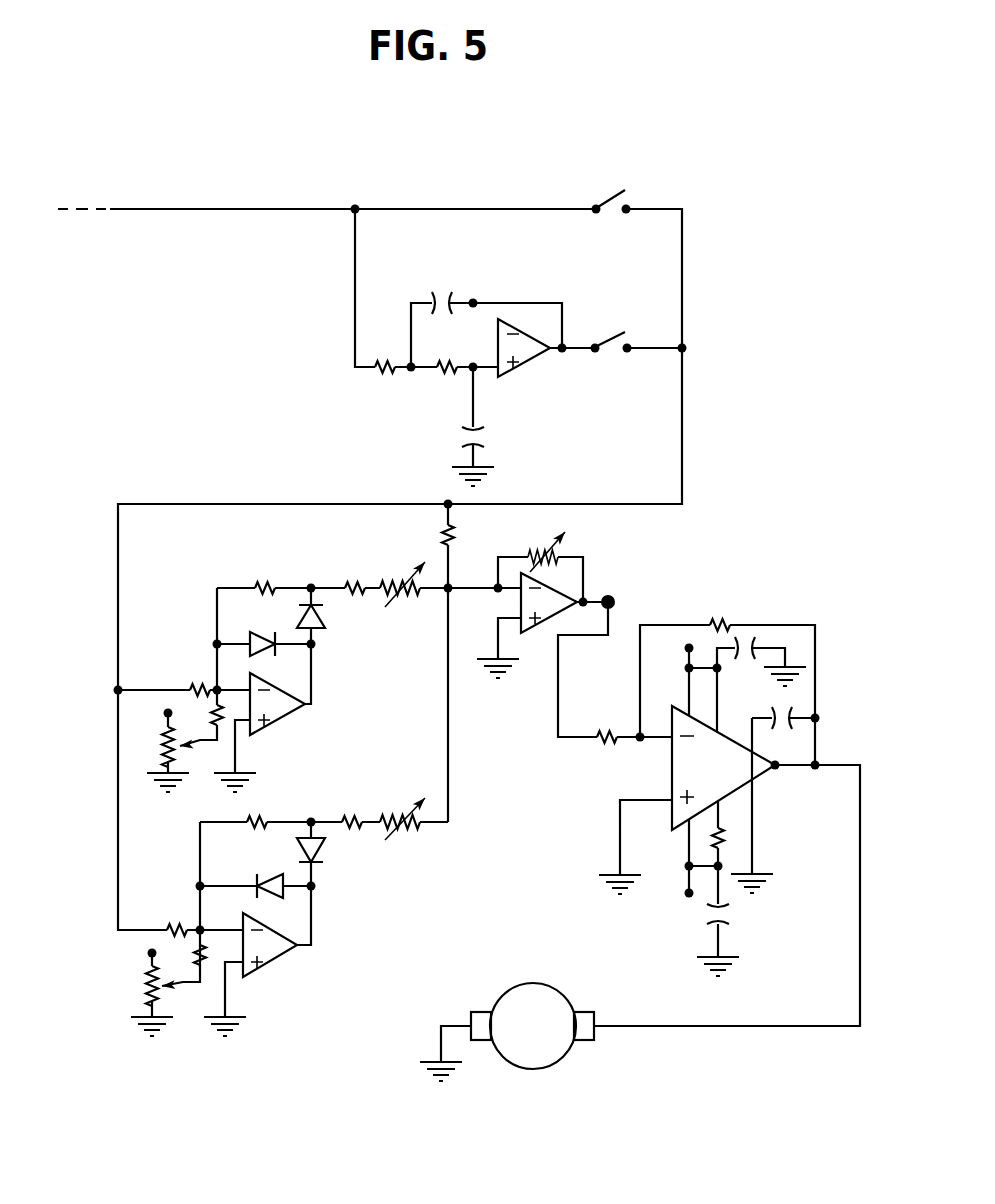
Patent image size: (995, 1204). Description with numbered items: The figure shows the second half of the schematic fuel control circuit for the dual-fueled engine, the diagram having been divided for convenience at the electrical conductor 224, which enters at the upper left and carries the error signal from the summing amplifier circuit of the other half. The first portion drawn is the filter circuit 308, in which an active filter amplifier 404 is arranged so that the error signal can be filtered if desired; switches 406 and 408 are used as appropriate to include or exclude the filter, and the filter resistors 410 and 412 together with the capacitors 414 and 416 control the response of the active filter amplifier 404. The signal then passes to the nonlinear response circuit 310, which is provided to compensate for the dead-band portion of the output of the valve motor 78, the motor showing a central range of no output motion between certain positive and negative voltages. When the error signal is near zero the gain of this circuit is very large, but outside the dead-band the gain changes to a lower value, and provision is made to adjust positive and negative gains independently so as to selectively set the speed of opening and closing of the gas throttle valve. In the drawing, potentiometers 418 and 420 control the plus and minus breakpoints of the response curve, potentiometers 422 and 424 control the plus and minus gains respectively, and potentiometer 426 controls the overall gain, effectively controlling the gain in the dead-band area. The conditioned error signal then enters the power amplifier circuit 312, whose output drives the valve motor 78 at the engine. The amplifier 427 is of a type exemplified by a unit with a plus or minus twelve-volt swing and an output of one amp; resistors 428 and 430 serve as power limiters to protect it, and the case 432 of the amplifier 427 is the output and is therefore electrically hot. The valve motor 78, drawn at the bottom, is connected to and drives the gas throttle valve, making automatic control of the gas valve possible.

The electrical conductor 224 is at (175, 207).
The filter circuit 308 is at (698, 170).
The switch 406 is at (615, 190).
The switch 408 is at (612, 338).
The active filter amplifier 404 is at (540, 358).
The filter resistor 410 is at (454, 344).
The filter resistor 412 is at (378, 372).
The capacitor 414 is at (431, 301).
The capacitor 416 is at (484, 449).
The nonlinear response circuit 310 is at (100, 830).
The potentiometer 418 is at (160, 752).
The potentiometer 420 is at (148, 985).
The potentiometer 422 is at (402, 585).
The potentiometer 424 is at (395, 818).
The potentiometer 426 is at (545, 553).
The power amplifier circuit 312 is at (811, 588).
The amplifier 427 is at (693, 770).
The resistor 428 is at (712, 691).
The resistor 430 is at (721, 841).
The case 432 is at (768, 759).
The valve motor 78 is at (536, 1063).